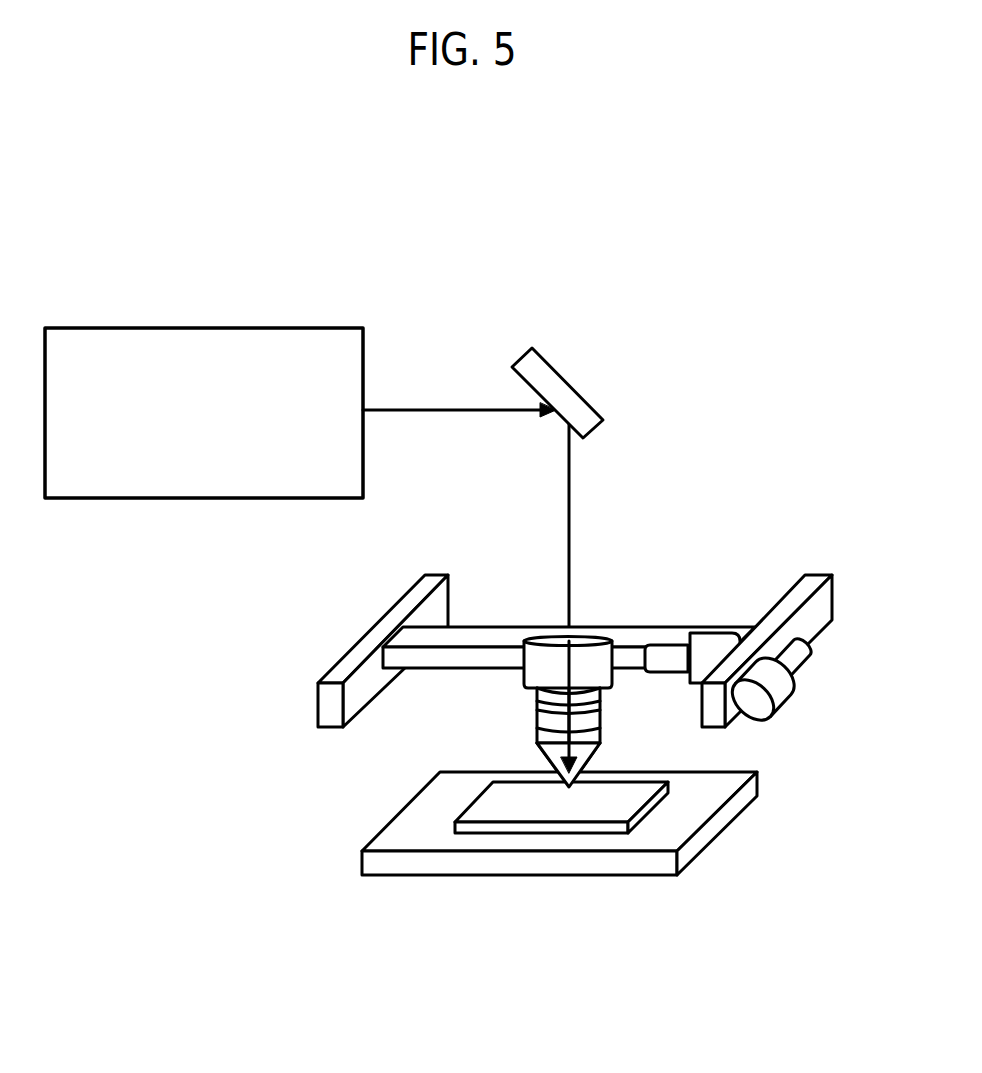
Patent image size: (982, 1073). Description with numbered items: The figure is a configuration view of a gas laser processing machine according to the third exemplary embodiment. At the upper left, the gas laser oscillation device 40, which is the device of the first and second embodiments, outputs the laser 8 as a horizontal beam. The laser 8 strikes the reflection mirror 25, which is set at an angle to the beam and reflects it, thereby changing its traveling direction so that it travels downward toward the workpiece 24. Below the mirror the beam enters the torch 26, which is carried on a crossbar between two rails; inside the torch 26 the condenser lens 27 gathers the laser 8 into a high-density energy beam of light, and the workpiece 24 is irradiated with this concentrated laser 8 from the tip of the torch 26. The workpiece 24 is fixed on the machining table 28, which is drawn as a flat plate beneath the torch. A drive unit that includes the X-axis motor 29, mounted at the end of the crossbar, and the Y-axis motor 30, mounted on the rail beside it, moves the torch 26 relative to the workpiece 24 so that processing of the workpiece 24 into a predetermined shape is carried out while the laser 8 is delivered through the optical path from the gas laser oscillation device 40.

The gas laser oscillation device 40 is at (313, 326).
The laser 8 is at (408, 405).
The reflection mirror 25 is at (550, 381).
The torch 26 is at (545, 735).
The condenser lens 27 is at (545, 722).
The X-axis motor 29 is at (708, 645).
The Y-axis motor 30 is at (777, 695).
The workpiece 24 is at (640, 803).
The machining table 28 is at (587, 865).